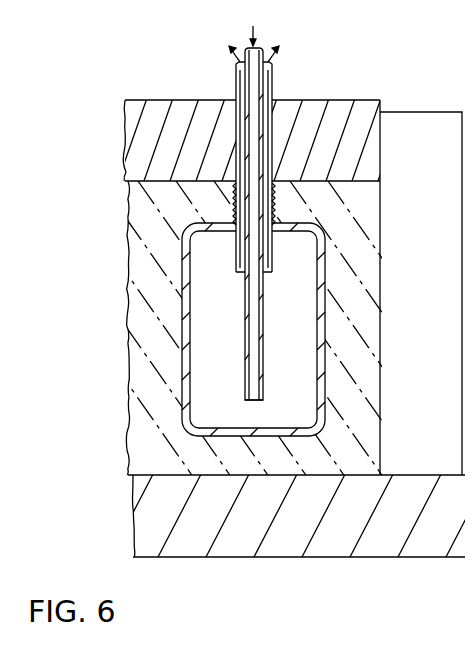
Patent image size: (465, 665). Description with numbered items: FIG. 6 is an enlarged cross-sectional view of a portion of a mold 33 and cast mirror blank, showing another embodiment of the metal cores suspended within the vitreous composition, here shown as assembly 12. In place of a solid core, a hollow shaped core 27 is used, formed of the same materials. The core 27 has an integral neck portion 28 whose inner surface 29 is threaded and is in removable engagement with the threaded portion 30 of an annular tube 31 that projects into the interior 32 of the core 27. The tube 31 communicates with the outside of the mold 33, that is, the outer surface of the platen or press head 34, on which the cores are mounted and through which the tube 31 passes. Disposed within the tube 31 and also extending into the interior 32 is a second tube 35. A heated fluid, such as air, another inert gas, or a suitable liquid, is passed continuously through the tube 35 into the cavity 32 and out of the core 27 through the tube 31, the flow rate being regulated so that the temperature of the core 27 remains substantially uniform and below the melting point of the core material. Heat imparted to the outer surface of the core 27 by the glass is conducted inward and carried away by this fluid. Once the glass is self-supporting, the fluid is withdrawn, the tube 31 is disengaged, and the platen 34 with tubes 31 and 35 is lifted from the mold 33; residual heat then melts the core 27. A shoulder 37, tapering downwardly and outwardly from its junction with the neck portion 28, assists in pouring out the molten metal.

The extrusion die assembly 12 is at (280, 32).
The shaped core 27 is at (320, 264).
The neck portion 28 is at (272, 190).
The inner surface 29 is at (275, 212).
The threaded portion 30 is at (233, 185).
The annular tube 31 is at (272, 250).
The interior 32 is at (300, 315).
The mold 33 is at (430, 128).
The platen 34 is at (333, 118).
The second tube 35 is at (262, 352).
The shoulder 37 is at (203, 226).